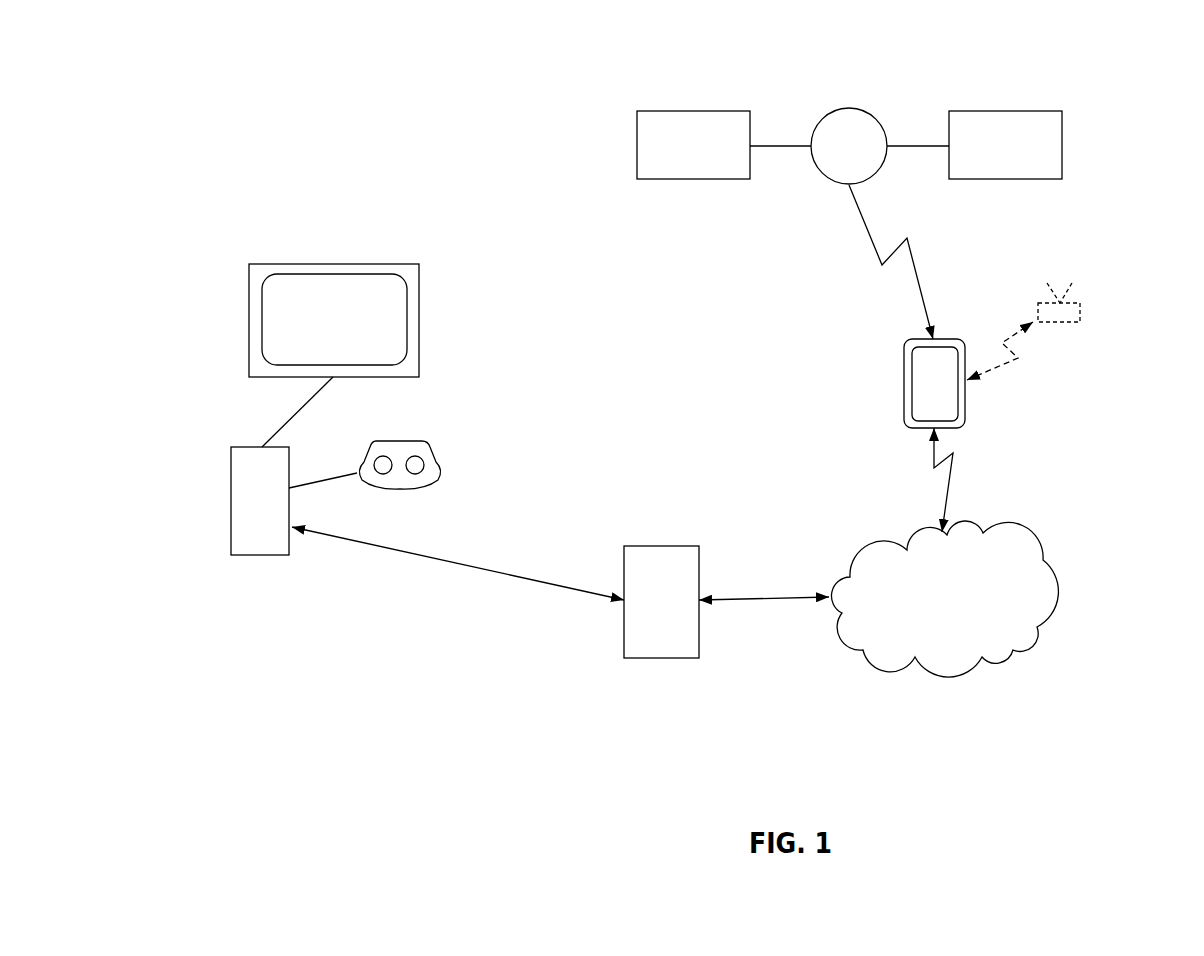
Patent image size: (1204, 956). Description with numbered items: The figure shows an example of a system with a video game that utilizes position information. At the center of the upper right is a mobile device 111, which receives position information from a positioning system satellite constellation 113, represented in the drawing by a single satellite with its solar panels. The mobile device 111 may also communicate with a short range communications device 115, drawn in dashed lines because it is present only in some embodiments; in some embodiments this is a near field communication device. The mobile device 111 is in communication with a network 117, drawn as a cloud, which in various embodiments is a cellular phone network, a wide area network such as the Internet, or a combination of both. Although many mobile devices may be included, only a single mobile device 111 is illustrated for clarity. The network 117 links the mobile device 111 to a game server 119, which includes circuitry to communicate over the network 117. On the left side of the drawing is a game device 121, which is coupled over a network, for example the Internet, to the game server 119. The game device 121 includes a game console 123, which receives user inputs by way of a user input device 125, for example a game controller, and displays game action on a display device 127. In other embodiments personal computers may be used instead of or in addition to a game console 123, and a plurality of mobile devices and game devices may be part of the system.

The mobile device 111 is at (965, 415).
The positioning system satellite constellation 113 is at (850, 107).
The short range communications device 115 is at (1080, 303).
The network 117 is at (1050, 562).
The game server 119 is at (662, 546).
The game device 121 is at (477, 405).
The game console 123 is at (231, 502).
The user input device 125 is at (437, 485).
The display device 127 is at (333, 264).